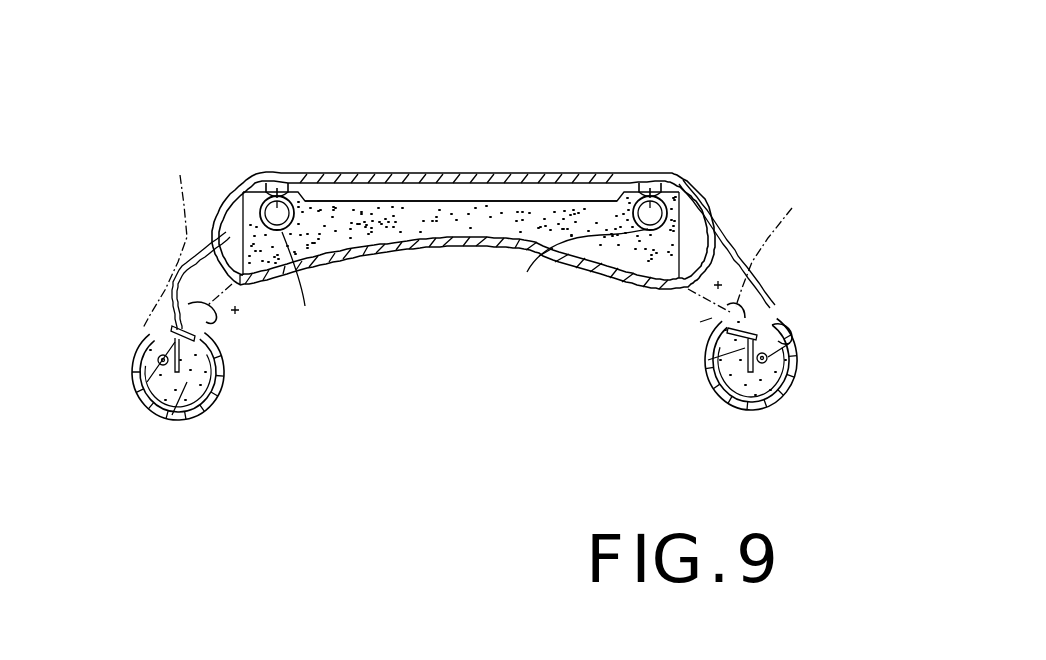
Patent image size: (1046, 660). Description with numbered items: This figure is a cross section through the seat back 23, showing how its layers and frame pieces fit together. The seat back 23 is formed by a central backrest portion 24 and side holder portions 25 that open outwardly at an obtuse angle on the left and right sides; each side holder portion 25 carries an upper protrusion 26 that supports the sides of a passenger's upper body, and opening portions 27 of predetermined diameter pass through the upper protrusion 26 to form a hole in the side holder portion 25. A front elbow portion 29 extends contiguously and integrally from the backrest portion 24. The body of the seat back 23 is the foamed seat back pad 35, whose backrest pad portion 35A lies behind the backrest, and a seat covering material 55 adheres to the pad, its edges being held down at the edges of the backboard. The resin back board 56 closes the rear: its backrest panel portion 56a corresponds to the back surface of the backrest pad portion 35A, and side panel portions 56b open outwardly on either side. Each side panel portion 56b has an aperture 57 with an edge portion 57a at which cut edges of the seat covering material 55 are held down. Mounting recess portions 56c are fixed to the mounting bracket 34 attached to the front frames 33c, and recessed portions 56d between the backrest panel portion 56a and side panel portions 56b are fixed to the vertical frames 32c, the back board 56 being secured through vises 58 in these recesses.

The seat back 23 is at (469, 270).
The backrest portion 24 is at (464, 265).
The side holder portion 25 is at (469, 357).
The upper protrusion 26 is at (195, 429).
The opening portion 27 is at (238, 312).
The front elbow portion 29 is at (172, 415).
The vertical frame 32c is at (462, 283).
The front frame 33c is at (150, 386).
The mounting bracket 34 is at (158, 394).
The seat back pad 35 is at (454, 191).
The backrest pad portion 35A is at (494, 214).
The seat covering material 55 is at (407, 257).
The back board 56 is at (463, 200).
The backrest panel portion 56a is at (382, 173).
The side panel portion 56b is at (491, 231).
The mounting recess portion 56c is at (172, 334).
The recessed portion 56d is at (288, 182).
The aperture 57 is at (178, 272).
The edge portion 57a is at (708, 318).
The vise 58 is at (278, 182).